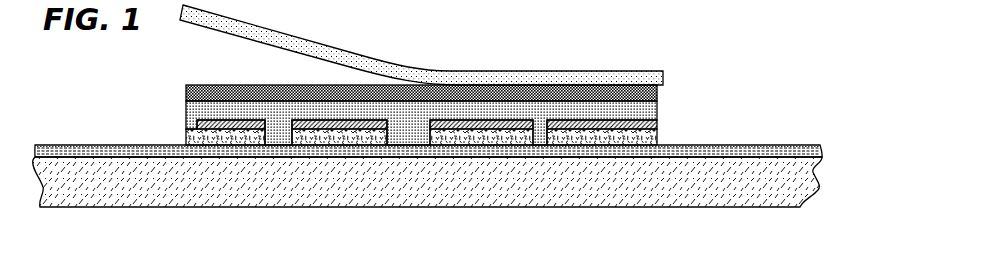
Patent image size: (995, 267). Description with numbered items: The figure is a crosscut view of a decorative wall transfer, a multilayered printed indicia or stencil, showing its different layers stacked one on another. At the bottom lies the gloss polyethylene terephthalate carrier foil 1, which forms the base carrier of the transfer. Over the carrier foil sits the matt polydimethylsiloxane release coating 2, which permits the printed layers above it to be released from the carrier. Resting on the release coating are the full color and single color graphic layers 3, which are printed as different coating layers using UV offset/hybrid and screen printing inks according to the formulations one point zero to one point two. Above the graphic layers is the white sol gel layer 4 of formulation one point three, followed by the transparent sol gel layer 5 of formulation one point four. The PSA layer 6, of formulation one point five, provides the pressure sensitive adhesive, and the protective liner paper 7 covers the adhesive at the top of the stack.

The gloss polyethylene terephthalate carrier foil 1 is at (795, 178).
The matt polydimethylsiloxane release coating 2 is at (793, 152).
The full color and single color graphic layers 3 is at (193, 139).
The white sol gel layer 4 is at (197, 124).
The transparent sol gel layer 5 is at (658, 108).
The PSA layer 6 is at (214, 92).
The protective liner paper 7 is at (518, 75).